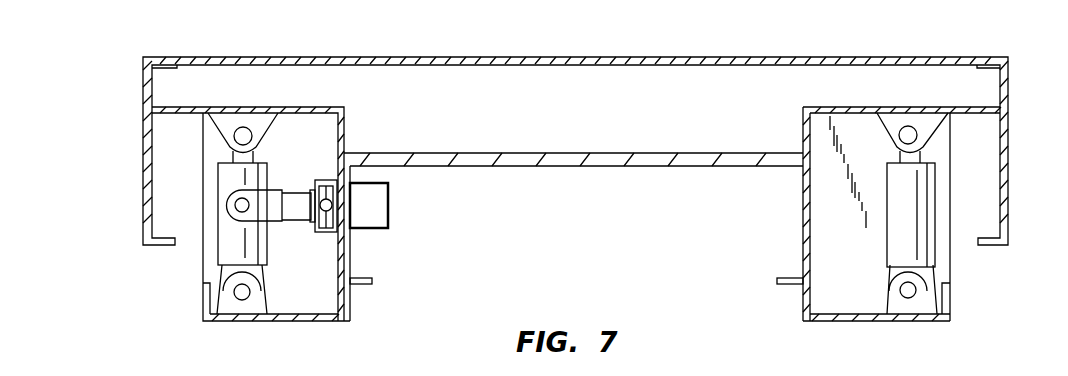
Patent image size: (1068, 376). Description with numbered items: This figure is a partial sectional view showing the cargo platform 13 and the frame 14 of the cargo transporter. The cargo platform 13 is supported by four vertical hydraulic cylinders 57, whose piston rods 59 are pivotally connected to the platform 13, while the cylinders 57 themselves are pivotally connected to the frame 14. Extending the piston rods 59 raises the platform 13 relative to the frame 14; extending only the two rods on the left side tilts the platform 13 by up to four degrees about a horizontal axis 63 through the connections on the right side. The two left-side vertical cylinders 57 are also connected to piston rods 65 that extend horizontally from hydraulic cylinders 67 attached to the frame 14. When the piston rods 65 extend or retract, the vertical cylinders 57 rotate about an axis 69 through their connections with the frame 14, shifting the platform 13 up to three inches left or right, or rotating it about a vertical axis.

The cargo platform 13 is at (524, 76).
The frame 14 is at (351, 287).
The vertical hydraulic cylinder 57 is at (228, 255).
The piston rod 59 is at (230, 158).
The horizontal axis 63 is at (908, 126).
The piston rod 65 is at (290, 203).
The hydraulic cylinder 67 is at (390, 208).
The axis 69 is at (243, 299).